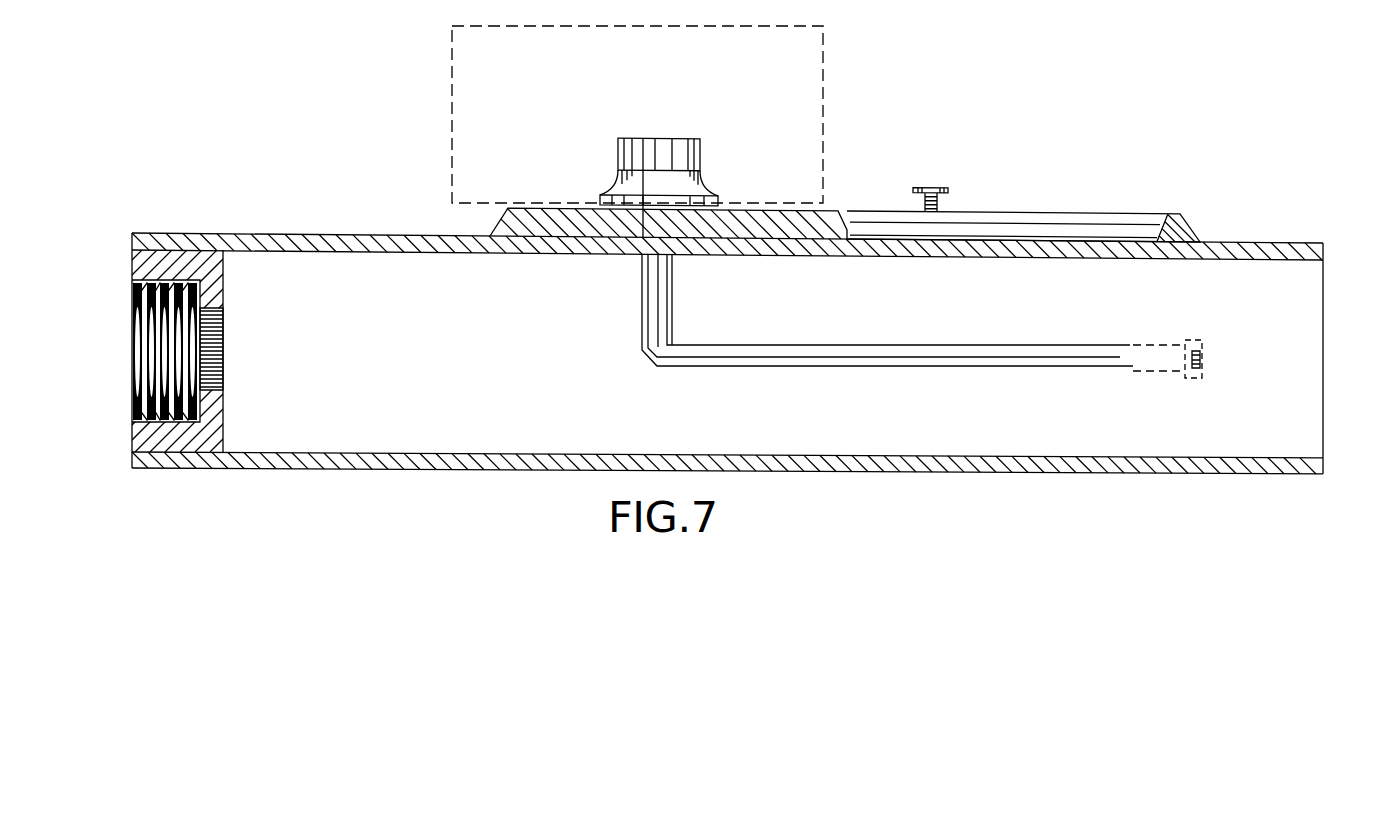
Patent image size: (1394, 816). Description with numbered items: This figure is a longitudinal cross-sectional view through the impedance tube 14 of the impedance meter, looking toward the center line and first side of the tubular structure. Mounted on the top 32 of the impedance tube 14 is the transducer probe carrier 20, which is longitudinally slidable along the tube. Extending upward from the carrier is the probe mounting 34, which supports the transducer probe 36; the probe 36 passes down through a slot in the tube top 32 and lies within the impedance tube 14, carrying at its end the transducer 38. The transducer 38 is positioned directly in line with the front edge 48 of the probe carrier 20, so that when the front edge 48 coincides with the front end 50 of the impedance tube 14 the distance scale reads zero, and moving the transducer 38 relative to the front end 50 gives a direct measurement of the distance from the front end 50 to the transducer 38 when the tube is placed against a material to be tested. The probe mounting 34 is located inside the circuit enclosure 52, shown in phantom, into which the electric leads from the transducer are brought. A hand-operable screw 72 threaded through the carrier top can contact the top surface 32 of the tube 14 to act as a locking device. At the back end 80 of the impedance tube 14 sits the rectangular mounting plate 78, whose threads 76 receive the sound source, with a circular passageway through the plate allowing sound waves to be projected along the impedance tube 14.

The impedance tube 14 is at (398, 469).
The transducer probe carrier 20 is at (490, 224).
The top of the impedance tube 32 is at (324, 234).
The probe mounting 34 is at (618, 188).
The transducer probe 36 is at (642, 336).
The transducer 38 is at (1202, 368).
The front edge of the probe carrier 48 is at (1203, 236).
The front end of the impedance tube 50 is at (1323, 384).
The circuit enclosure 52 is at (823, 84).
The hand-operable screw 72 is at (946, 190).
The threads 76 is at (142, 349).
The mounting plate 78 is at (223, 437).
The back end of the impedance tube 80 is at (222, 350).